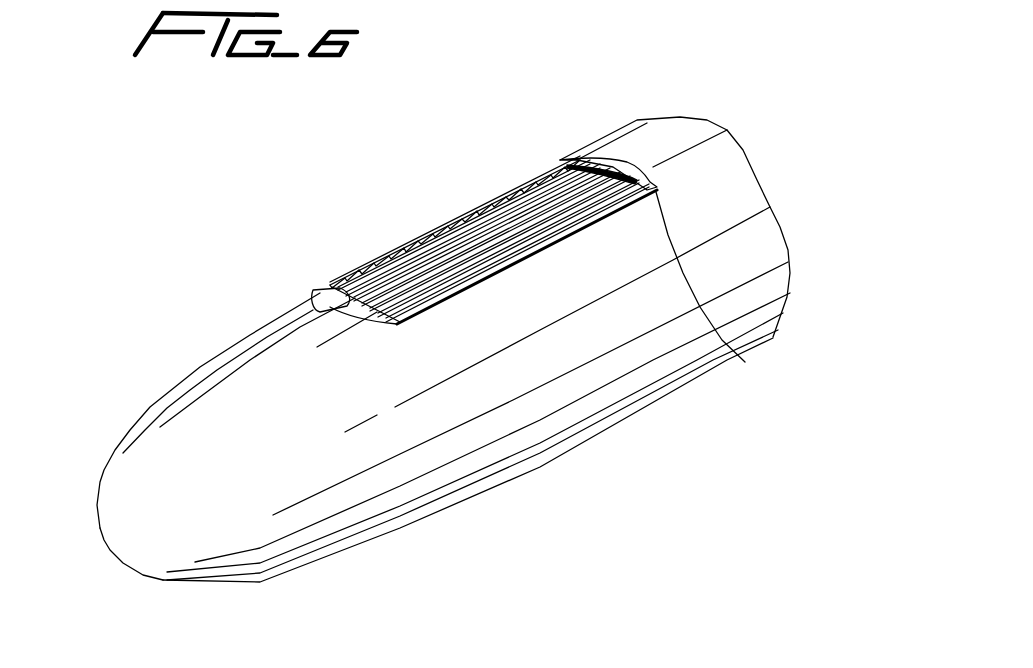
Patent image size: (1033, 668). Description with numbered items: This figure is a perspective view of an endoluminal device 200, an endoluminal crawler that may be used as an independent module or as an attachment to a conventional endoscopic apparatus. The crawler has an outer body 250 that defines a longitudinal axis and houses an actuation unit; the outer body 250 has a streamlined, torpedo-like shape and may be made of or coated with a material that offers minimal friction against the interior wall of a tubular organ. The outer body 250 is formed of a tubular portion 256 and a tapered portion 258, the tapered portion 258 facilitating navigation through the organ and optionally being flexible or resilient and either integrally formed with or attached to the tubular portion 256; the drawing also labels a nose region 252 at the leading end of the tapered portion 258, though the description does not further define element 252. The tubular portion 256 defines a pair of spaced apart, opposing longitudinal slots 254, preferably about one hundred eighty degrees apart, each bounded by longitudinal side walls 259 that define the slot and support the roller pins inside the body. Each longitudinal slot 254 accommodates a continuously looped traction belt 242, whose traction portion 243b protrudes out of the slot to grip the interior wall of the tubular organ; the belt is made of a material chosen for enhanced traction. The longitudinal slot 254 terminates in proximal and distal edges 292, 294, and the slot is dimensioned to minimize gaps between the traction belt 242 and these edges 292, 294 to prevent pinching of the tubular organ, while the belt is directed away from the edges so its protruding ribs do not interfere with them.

The endoluminal device 200 is at (740, 121).
The traction belt 242 is at (753, 365).
The traction portion 243b is at (383, 260).
The outer body 250 is at (748, 258).
The nose portion 252 is at (178, 532).
The longitudinal slot 254 is at (497, 225).
The tubular portion 256 is at (318, 290).
The tapered portion 258 is at (170, 445).
The longitudinal side wall 259 is at (515, 383).
The proximal edge 292 is at (600, 160).
The distal edge 294 is at (300, 300).